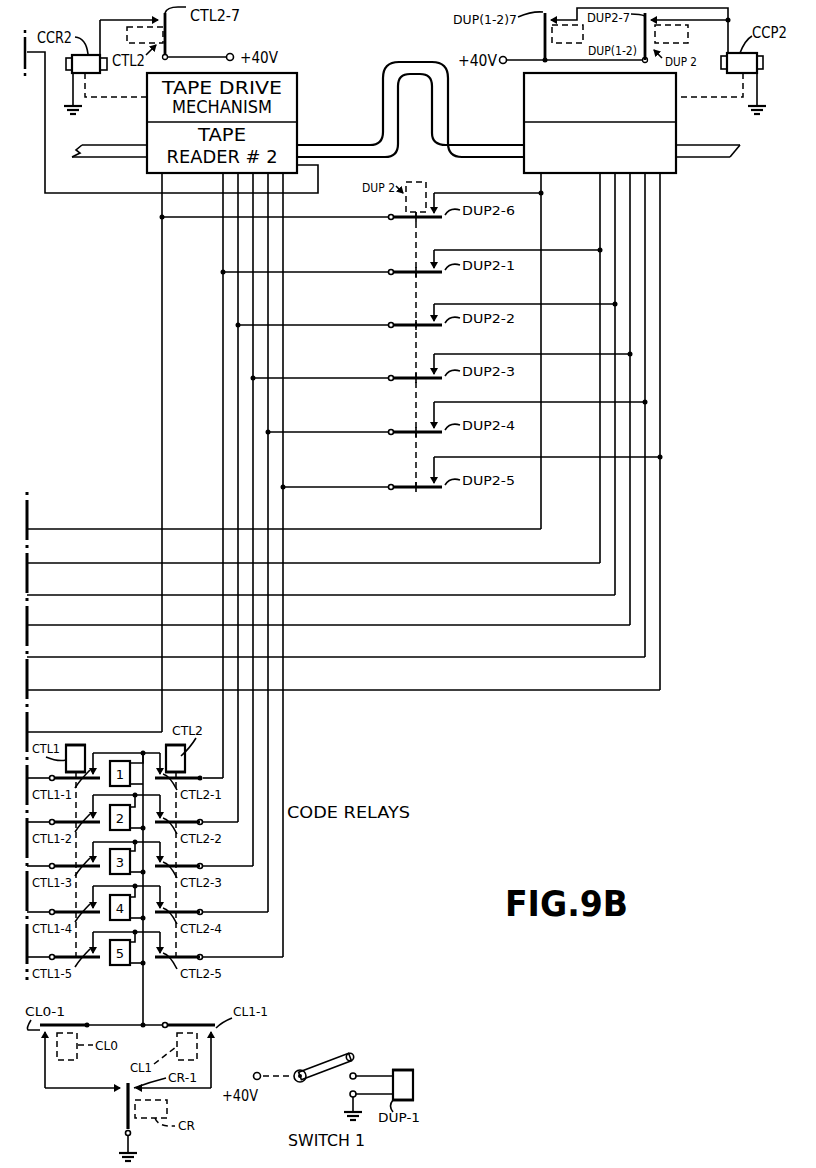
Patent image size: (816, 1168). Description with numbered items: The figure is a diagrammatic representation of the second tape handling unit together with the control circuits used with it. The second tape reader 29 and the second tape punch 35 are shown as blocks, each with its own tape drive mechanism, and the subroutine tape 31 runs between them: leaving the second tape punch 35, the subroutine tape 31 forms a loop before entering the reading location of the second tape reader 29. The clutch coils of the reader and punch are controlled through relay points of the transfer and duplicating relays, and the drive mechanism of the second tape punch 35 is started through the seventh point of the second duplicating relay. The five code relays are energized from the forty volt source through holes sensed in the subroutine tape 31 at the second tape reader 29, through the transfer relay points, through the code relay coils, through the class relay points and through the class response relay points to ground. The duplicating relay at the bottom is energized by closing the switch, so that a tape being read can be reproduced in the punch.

The second tape reader 29 is at (297, 137).
The subroutine tape 31 is at (418, 66).
The second tape punch 35 is at (524, 130).